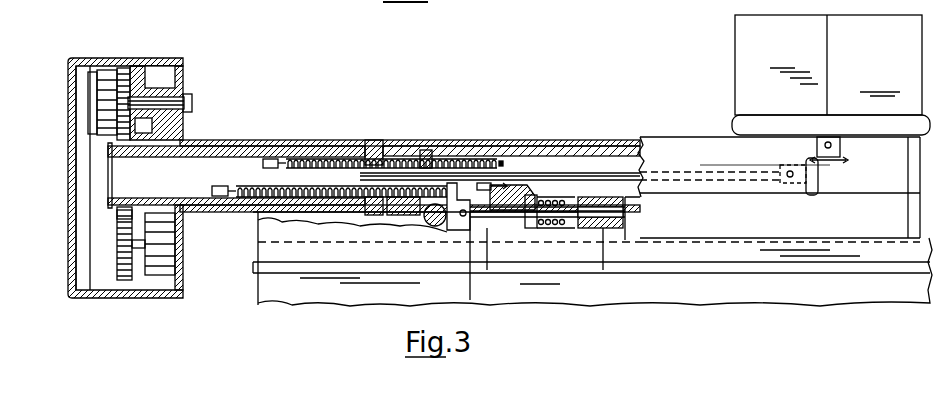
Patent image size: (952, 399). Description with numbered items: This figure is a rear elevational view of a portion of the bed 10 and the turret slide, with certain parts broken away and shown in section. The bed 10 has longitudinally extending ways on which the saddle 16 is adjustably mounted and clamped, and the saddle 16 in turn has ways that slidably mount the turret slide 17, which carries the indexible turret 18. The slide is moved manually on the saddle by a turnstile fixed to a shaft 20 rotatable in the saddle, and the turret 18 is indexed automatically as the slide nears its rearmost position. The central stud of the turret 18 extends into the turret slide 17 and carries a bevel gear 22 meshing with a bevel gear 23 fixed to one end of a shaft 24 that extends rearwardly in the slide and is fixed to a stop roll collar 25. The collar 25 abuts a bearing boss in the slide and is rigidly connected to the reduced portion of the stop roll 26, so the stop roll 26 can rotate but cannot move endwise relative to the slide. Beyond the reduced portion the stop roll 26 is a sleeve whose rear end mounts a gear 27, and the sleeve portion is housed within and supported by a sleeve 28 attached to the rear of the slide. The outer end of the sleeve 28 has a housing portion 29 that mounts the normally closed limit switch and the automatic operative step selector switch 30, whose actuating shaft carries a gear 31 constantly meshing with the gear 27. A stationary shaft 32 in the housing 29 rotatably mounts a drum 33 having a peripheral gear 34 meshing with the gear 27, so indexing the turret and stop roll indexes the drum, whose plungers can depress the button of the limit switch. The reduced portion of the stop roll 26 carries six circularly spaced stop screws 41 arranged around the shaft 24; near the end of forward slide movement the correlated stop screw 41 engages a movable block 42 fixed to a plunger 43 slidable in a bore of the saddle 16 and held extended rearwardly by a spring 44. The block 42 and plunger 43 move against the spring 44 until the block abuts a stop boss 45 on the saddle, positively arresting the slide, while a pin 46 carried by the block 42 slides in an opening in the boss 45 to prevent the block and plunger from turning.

The bed 10 is at (725, 292).
The saddle 16 is at (628, 234).
The turret slide 17 is at (660, 140).
The indexible turret 18 is at (831, 75).
The shaft 20 is at (425, 222).
The bevel gear 22 is at (842, 164).
The bevel gear 23 is at (812, 200).
The shaft 24 is at (632, 172).
The stop roll collar 25 is at (428, 150).
The stop roll 26 is at (296, 148).
The gear 27 is at (124, 207).
The sleeve 28 is at (254, 140).
The housing portion 29 is at (148, 58).
The automatic operative step selector switch 30 is at (165, 275).
The gear 31 is at (126, 280).
The stationary shaft 32 is at (160, 98).
The drum 33 is at (112, 70).
The gear 34 is at (120, 72).
The stop screws 41 is at (455, 158).
The movable block 42 is at (455, 230).
The plunger 43 is at (530, 197).
The spring 44 is at (583, 200).
The stop boss 45 is at (518, 185).
The pin 46 is at (480, 183).